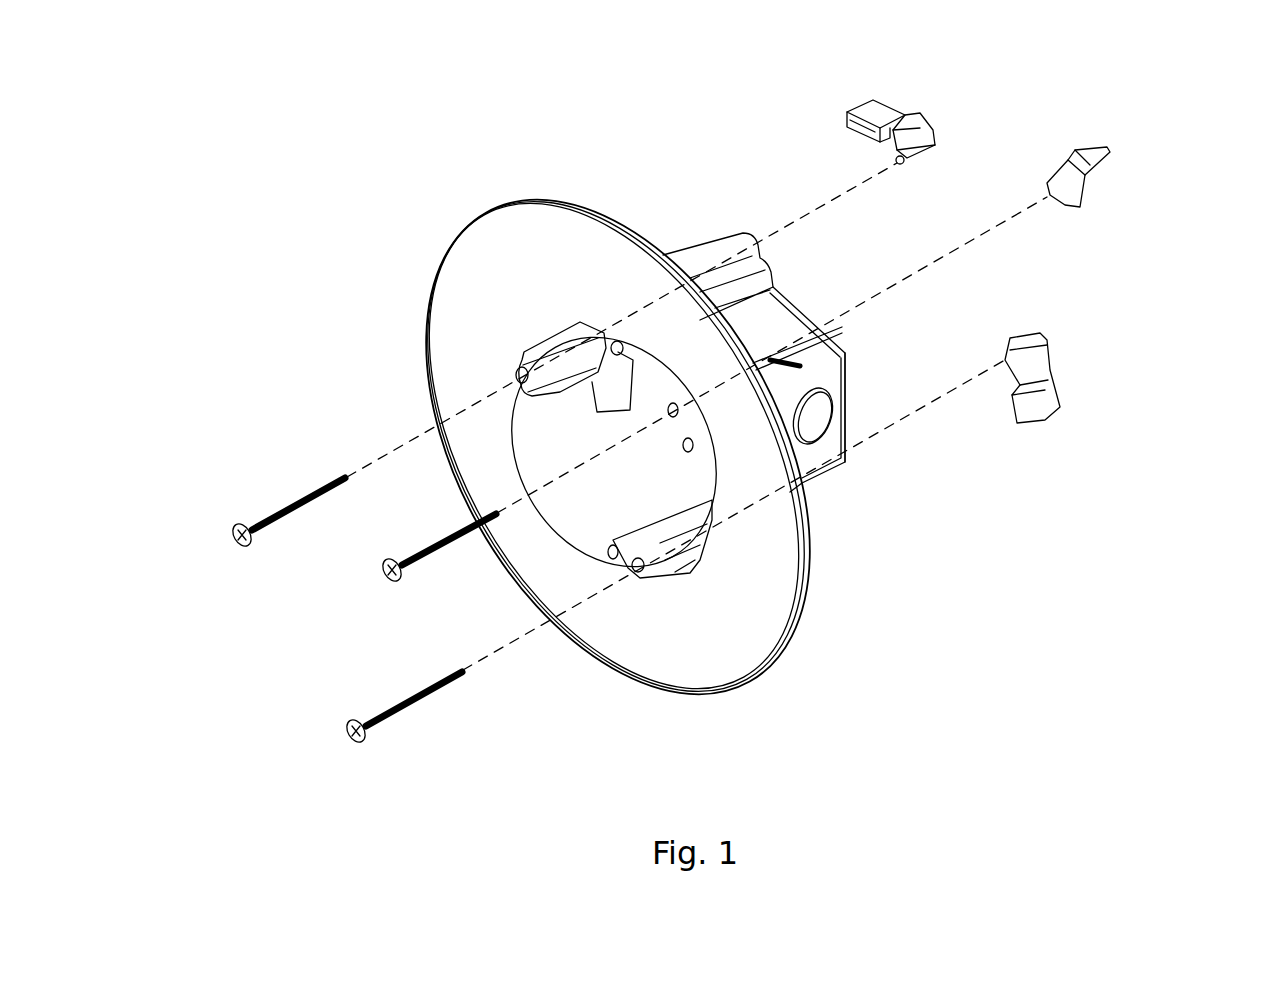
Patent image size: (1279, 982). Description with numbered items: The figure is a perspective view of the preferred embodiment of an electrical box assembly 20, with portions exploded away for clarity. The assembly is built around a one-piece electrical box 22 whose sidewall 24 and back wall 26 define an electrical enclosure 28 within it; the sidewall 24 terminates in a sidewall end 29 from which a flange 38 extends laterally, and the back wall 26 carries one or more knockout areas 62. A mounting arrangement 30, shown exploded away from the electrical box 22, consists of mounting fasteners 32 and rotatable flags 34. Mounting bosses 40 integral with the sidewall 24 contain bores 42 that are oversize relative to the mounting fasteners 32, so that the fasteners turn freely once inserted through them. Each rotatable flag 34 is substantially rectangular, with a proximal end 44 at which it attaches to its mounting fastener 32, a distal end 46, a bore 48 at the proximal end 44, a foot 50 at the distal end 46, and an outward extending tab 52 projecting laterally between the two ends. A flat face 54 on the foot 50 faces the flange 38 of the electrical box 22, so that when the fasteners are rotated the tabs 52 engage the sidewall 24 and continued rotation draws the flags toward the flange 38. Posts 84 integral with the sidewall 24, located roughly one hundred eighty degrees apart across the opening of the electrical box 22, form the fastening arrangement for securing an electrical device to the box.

The electrical box assembly 20 is at (382, 198).
The electrical box 22 is at (825, 490).
The sidewall 24 is at (705, 248).
The back wall 26 is at (850, 405).
The electrical enclosure 28 is at (580, 493).
The sidewall end 29 is at (520, 438).
The mounting arrangement 30 is at (262, 490).
The mounting fasteners 32 is at (294, 512).
The rotatable flags 34 is at (985, 229).
The flange 38 is at (616, 447).
The mounting bosses 40 is at (565, 345).
The bores 42 is at (520, 375).
The proximal end 44 is at (925, 150).
The distal end 46 is at (848, 115).
The bore 48 is at (900, 165).
The foot 50 is at (860, 140).
The tab 52 is at (920, 120).
The flat face 54 is at (848, 127).
The knockout areas 62 is at (815, 420).
The posts 84 is at (625, 348).